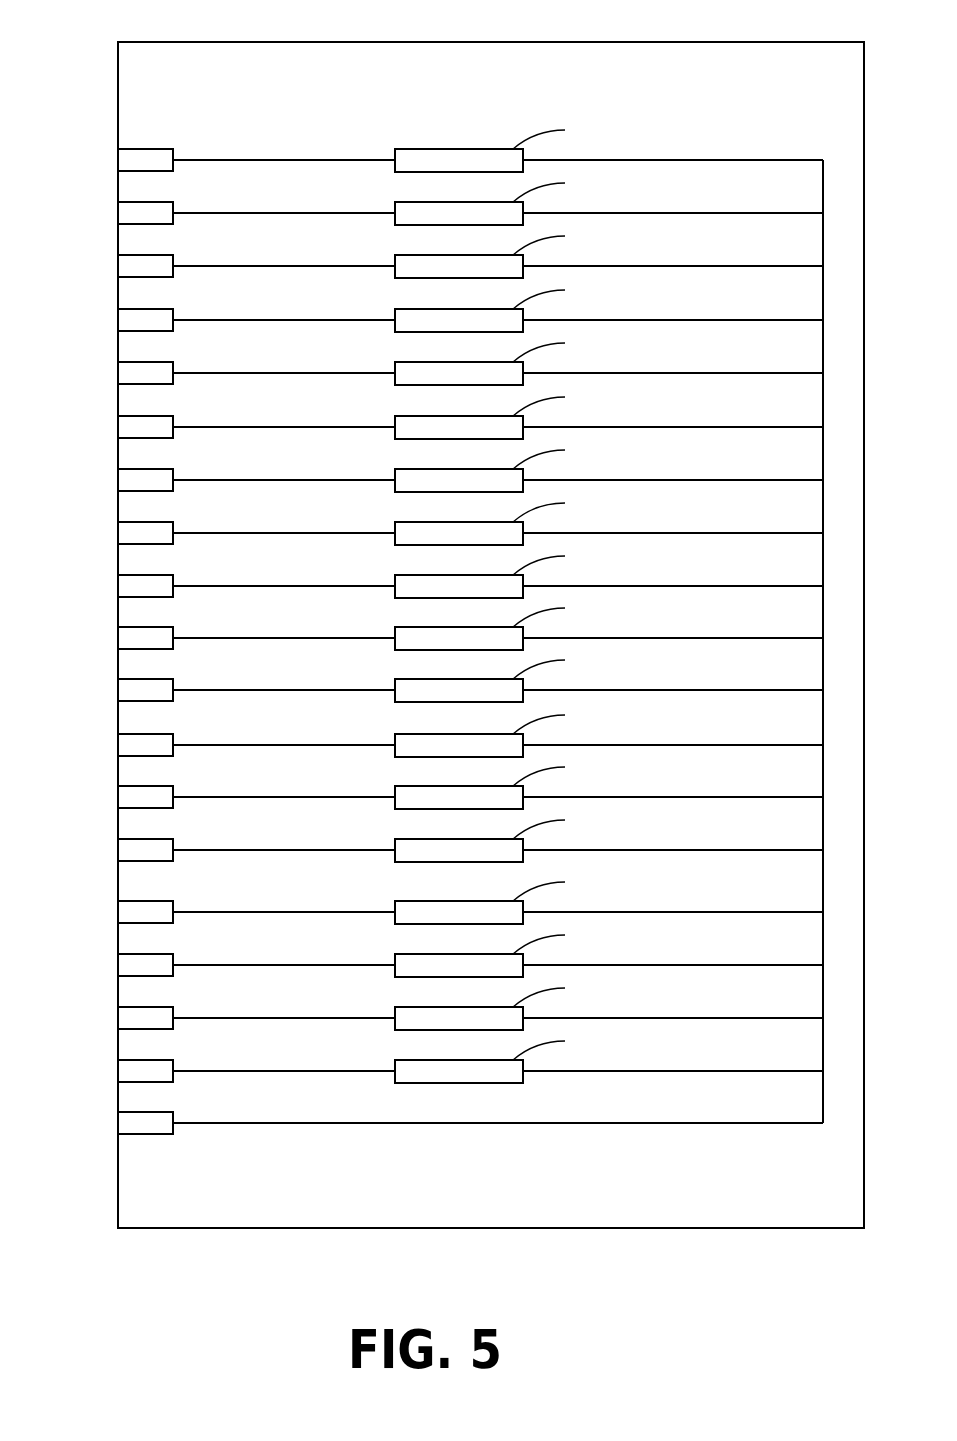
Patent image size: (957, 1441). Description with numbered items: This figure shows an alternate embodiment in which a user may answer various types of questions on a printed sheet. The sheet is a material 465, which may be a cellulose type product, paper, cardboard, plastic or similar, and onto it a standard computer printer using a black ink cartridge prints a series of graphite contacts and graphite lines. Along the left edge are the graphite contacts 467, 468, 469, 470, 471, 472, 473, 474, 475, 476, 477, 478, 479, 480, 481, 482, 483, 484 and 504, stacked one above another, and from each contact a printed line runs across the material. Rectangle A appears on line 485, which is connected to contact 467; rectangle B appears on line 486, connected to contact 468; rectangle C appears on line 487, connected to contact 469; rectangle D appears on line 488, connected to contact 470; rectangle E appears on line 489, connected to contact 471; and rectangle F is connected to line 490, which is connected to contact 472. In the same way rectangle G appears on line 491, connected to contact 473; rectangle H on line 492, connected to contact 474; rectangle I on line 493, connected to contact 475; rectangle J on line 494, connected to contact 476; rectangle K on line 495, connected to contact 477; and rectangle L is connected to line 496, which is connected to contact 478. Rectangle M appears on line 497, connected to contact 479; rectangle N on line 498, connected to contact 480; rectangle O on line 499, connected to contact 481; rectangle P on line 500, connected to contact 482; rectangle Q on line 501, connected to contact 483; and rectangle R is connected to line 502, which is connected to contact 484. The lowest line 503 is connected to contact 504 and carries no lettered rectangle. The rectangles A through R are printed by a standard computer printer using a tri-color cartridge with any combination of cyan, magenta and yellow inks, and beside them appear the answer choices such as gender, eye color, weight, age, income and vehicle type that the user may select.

The material 465 is at (383, 42).
The graphite contact 467 is at (118, 150).
The graphite contact 468 is at (118, 203).
The graphite contact 469 is at (118, 256).
The graphite contact 470 is at (118, 310).
The graphite contact 471 is at (118, 363).
The graphite contact 472 is at (118, 417).
The graphite contact 473 is at (118, 470).
The graphite contact 474 is at (118, 523).
The graphite contact 475 is at (118, 576).
The graphite contact 476 is at (118, 628).
The graphite contact 477 is at (118, 680).
The graphite contact 478 is at (118, 735).
The graphite contact 479 is at (118, 787).
The graphite contact 480 is at (118, 840).
The graphite contact 481 is at (118, 902).
The graphite contact 482 is at (118, 955).
The graphite contact 483 is at (118, 1008).
The graphite contact 484 is at (118, 1061).
The line 485 is at (334, 158).
The line 486 is at (334, 211).
The line 487 is at (334, 264).
The line 488 is at (334, 318).
The line 489 is at (334, 371).
The line 490 is at (334, 425).
The line 491 is at (334, 478).
The line 492 is at (334, 531).
The line 493 is at (334, 584).
The line 494 is at (334, 636).
The line 495 is at (334, 688).
The line 496 is at (334, 743).
The line 497 is at (334, 795).
The line 498 is at (334, 848).
The line 499 is at (334, 910).
The line 500 is at (334, 963).
The line 501 is at (334, 1016).
The line 502 is at (334, 1069).
The line 503 is at (357, 1123).
The graphite contact 504 is at (118, 1113).